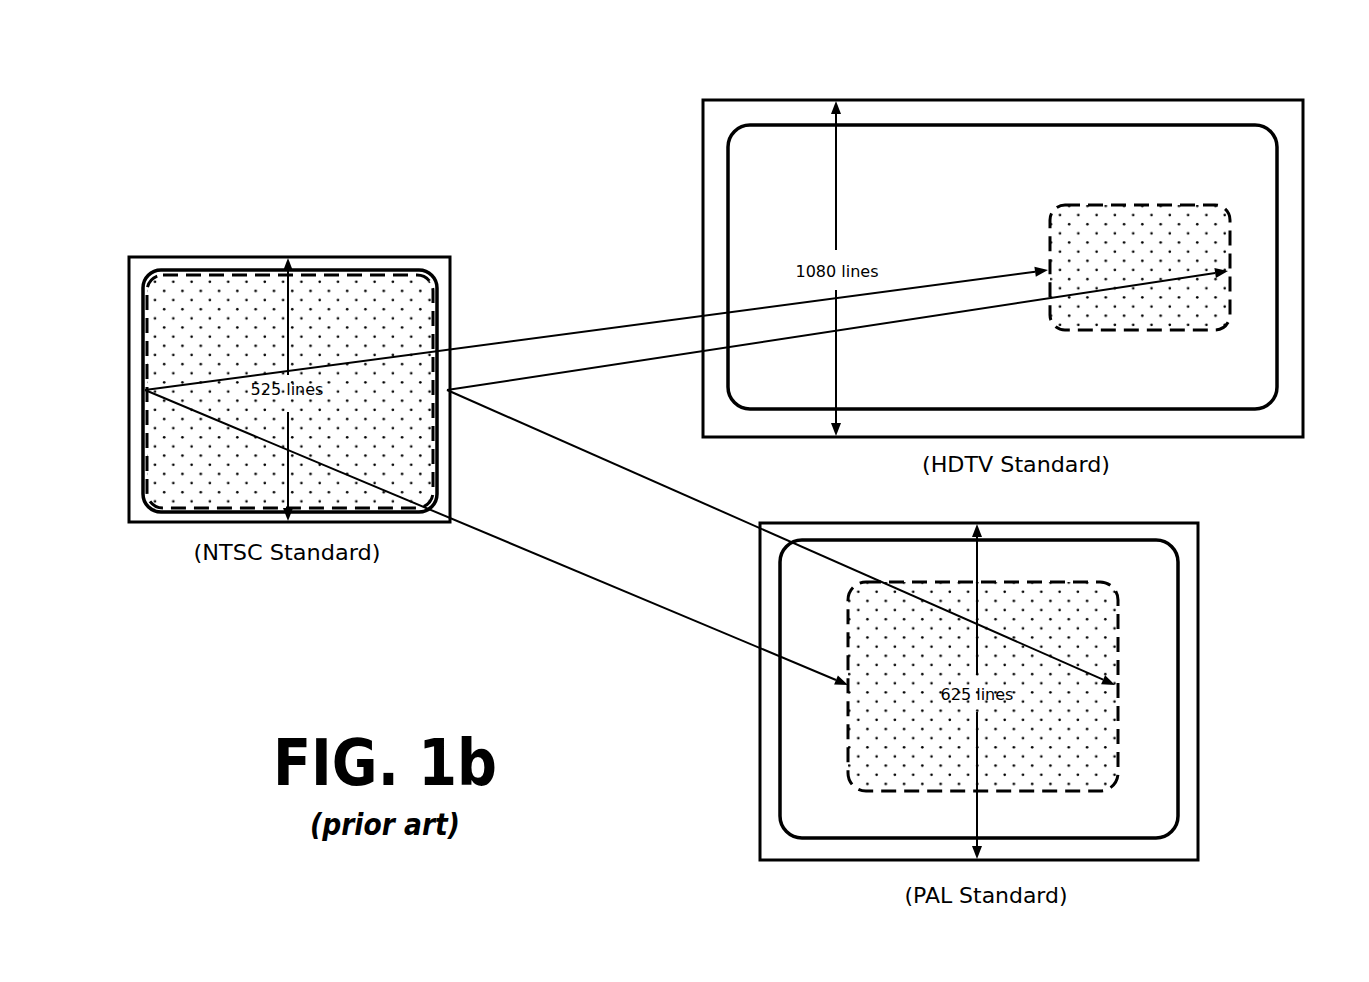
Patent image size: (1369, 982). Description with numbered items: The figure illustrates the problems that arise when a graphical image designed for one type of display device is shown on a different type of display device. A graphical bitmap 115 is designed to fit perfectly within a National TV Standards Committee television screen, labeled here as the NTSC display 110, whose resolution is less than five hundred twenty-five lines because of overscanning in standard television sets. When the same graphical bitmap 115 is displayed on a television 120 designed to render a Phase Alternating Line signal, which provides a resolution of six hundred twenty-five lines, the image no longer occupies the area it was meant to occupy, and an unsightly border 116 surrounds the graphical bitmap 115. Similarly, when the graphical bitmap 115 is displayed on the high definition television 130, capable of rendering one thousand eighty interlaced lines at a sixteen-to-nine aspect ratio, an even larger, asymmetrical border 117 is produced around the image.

The NTSC standard display 110 is at (423, 255).
The graphical bitmap 115 is at (242, 293).
The border 116 is at (1143, 583).
The asymmetrical border 117 is at (1142, 392).
The television 120 is at (1200, 695).
The HDTV standard display 130 is at (1002, 98).